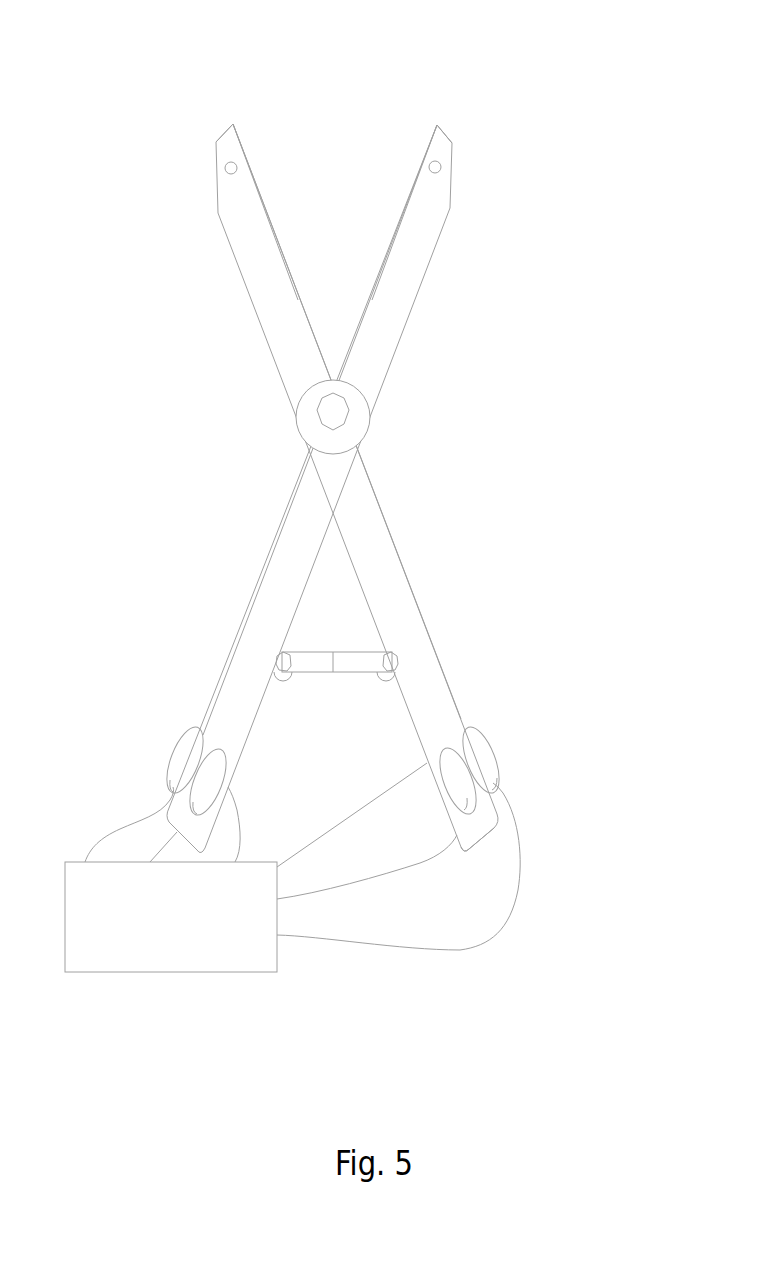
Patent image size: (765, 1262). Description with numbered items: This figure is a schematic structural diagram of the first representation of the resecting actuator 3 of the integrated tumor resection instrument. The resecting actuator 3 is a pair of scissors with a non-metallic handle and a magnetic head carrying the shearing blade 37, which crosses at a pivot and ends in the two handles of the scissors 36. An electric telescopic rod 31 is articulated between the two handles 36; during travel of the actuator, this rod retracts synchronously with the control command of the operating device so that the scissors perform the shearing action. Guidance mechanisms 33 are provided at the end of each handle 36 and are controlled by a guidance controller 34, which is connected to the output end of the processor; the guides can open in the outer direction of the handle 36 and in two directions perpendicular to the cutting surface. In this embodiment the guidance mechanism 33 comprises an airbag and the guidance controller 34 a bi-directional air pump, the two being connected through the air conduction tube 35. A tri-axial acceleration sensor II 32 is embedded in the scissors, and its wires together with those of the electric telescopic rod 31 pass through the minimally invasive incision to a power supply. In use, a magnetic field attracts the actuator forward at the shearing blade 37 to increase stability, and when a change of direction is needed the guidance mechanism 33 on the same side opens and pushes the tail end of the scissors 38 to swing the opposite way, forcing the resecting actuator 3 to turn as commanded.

The resecting actuator 3 is at (371, 533).
The electric telescopic rod 31 is at (222, 687).
The tri-axial acceleration sensor II 32 is at (441, 166).
The guidance mechanism 33 is at (480, 752).
The guidance controller 34 is at (142, 947).
The air conduction tube 35 is at (362, 945).
The handles of the scissors 36 is at (318, 663).
The shearing blade 37 is at (282, 252).
The tail end of the scissors 38 is at (483, 842).